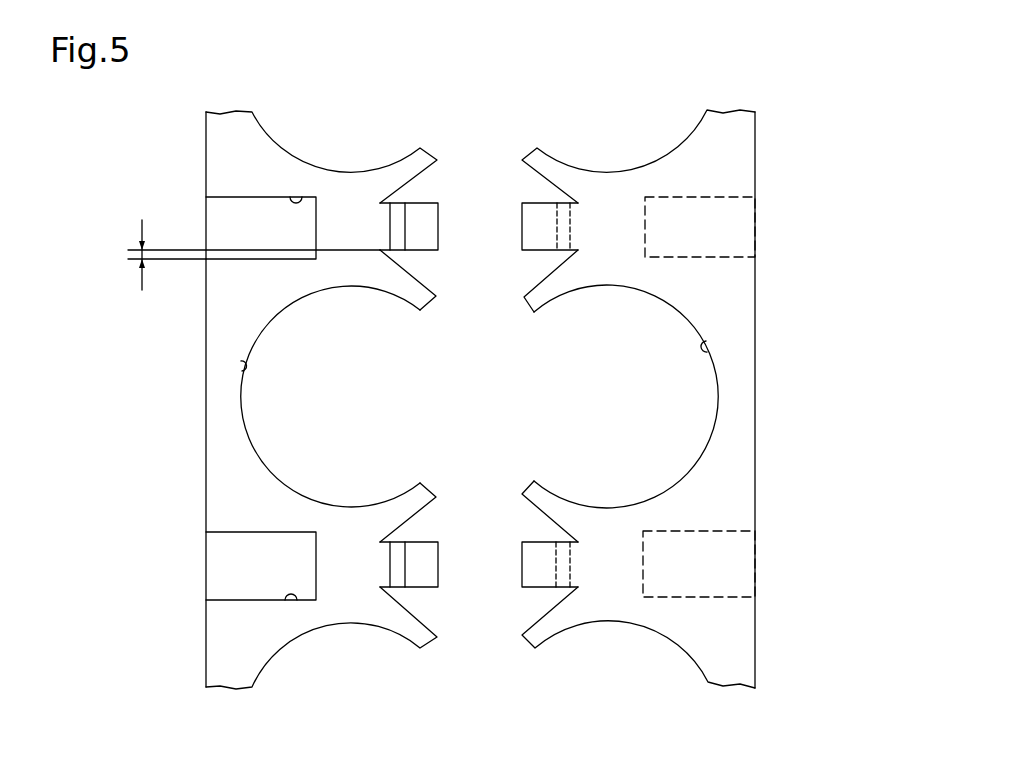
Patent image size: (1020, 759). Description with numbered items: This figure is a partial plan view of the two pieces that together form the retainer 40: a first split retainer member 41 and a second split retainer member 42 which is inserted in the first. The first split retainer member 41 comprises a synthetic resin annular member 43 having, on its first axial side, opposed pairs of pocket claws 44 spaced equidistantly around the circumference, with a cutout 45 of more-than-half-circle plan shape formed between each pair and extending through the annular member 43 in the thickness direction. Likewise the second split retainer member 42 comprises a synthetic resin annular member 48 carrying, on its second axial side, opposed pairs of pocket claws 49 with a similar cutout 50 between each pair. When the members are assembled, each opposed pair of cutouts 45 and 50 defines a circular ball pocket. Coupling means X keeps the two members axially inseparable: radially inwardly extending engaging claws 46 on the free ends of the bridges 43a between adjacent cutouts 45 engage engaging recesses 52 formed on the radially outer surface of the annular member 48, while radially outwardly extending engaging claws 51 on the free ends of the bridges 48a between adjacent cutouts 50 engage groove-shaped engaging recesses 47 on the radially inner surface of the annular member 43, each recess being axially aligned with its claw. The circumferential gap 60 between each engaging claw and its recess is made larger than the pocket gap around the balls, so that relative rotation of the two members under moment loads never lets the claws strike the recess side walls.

The retainer 40 is at (250, 102).
The first split retainer member 41 is at (758, 141).
The second split retainer member 42 is at (204, 137).
The annular member 43 is at (740, 393).
The bridge 43a is at (607, 270).
The pocket claw 44 is at (550, 163).
The cutout 45 is at (707, 346).
The engaging claw 46 is at (568, 227).
The engaging recess 47 is at (728, 197).
The annular member 48 is at (217, 417).
The bridge 48a is at (358, 270).
The pocket claw 49 is at (417, 305).
The cutout 50 is at (243, 368).
The engaging claw 51 is at (398, 206).
The engaging recess 52 is at (298, 198).
The circumferential gap 60 is at (300, 259).
The coupling means X is at (445, 202).